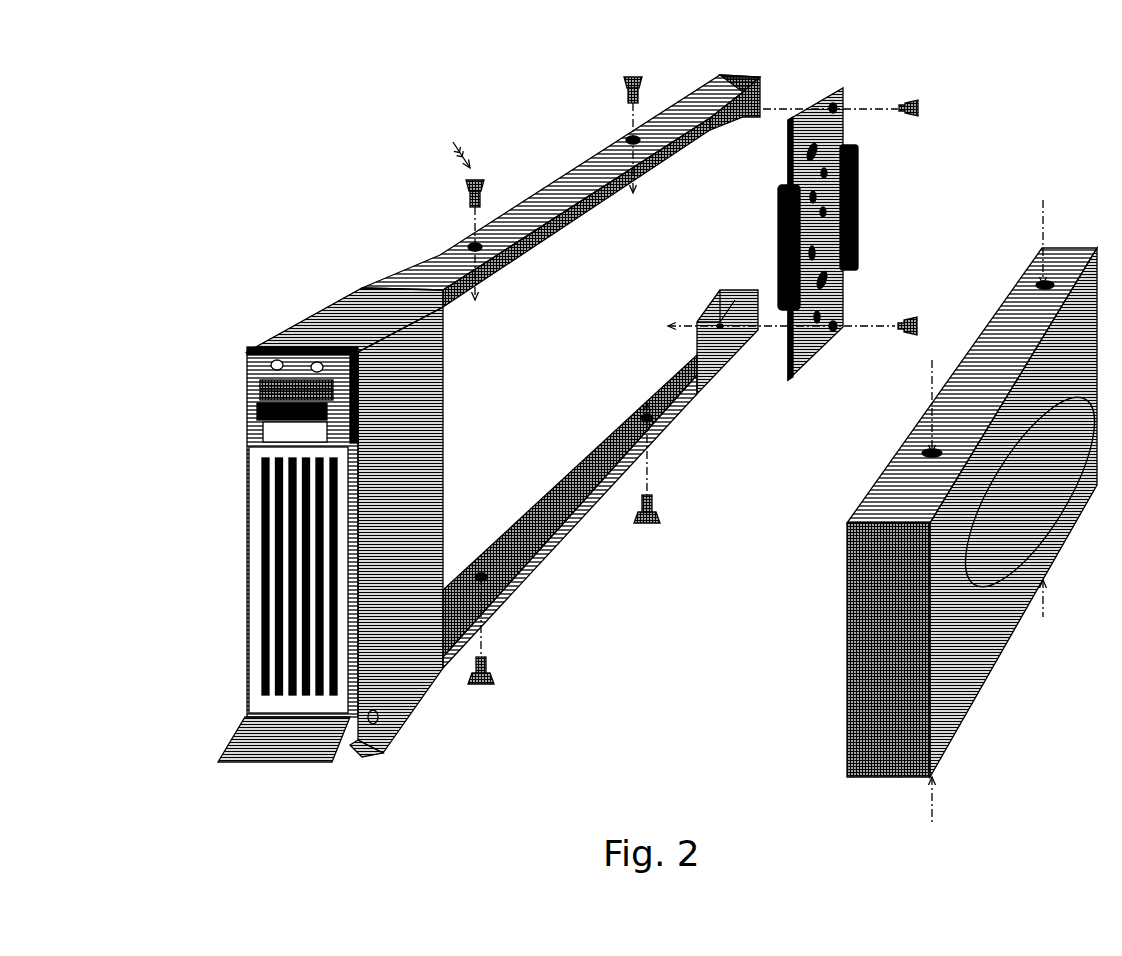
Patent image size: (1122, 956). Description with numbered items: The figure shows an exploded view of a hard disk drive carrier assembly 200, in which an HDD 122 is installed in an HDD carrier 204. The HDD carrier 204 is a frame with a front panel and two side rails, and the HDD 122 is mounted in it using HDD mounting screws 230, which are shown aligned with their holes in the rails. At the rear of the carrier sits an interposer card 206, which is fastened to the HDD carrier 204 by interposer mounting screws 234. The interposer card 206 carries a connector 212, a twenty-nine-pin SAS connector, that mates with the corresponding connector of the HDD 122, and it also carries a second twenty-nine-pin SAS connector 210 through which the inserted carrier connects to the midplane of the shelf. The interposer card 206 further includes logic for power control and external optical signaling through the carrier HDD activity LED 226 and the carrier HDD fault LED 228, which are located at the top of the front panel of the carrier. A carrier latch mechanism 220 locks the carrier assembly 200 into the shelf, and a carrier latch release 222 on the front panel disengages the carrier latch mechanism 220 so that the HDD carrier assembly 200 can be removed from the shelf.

The HDD carrier assembly 200 is at (509, 64).
The HDD carrier 204 is at (450, 368).
The interposer card 206 is at (848, 85).
The 29-pin SAS connector 210 is at (862, 178).
The connector 212 is at (770, 228).
The carrier latch mechanism 220 is at (390, 744).
The carrier latch release 222 is at (240, 398).
The carrier HDD activity LED 226 is at (317, 360).
The carrier HDD fault LED 228 is at (275, 355).
The HDD mounting screws 230 is at (622, 88).
The interposer mounting screws 234 is at (928, 100).
The HDD 122 is at (1017, 632).